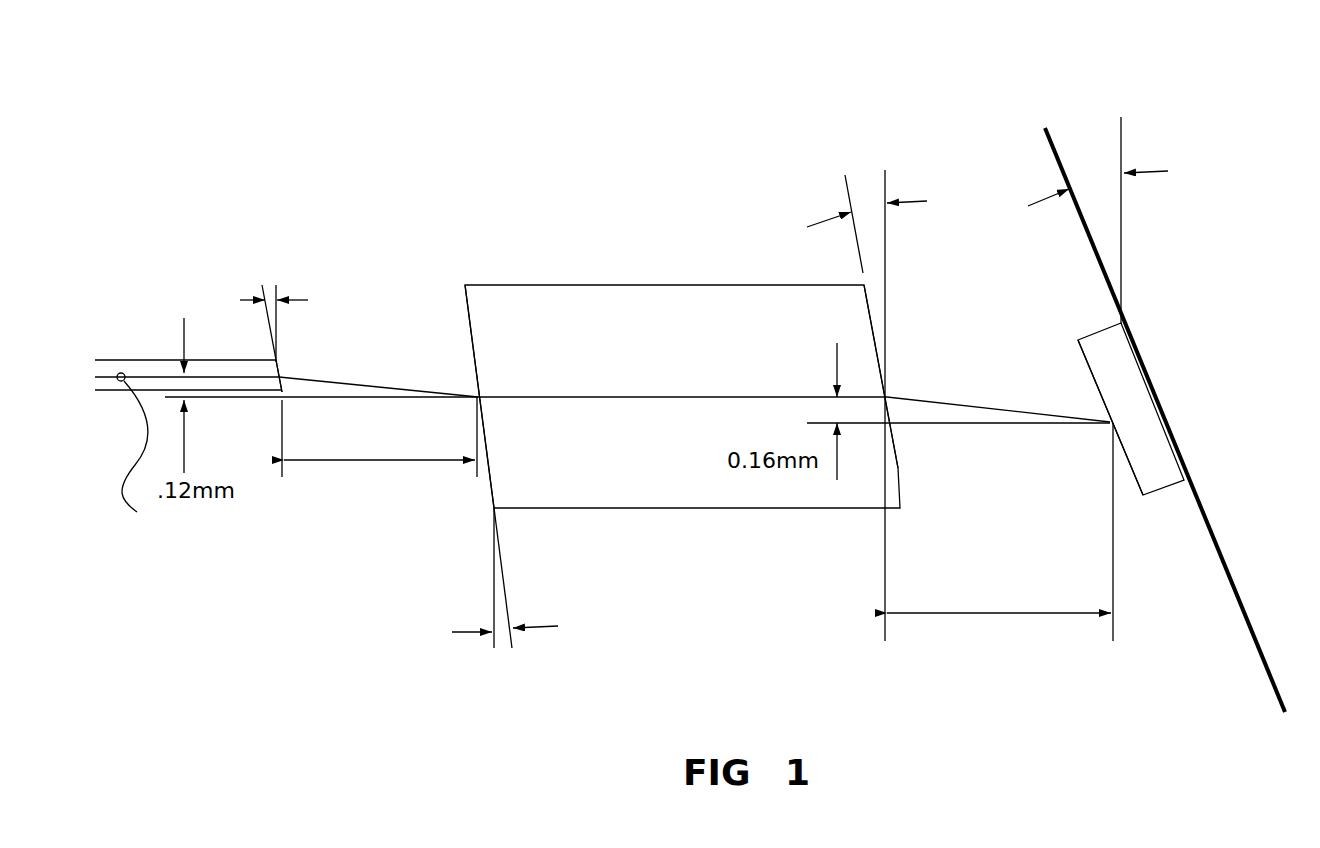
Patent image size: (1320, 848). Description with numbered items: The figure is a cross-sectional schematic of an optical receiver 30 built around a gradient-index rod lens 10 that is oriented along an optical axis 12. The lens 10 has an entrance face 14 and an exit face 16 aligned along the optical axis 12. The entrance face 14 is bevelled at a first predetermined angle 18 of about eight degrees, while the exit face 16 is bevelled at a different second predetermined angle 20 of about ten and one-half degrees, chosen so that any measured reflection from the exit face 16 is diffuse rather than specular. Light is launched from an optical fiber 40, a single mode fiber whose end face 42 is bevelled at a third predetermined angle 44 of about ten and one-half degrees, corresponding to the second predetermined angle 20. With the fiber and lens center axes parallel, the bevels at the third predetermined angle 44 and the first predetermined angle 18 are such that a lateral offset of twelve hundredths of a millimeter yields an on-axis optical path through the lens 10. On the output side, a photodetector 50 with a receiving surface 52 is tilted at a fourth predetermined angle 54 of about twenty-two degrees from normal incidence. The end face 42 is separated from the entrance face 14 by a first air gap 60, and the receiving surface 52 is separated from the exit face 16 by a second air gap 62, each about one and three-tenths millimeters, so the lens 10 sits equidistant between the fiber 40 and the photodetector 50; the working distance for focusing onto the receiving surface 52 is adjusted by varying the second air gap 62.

The GRIN rod lens 10 is at (665, 225).
The optical axis 12 is at (627, 397).
The entrance face 14 is at (416, 393).
The exit face 16 is at (910, 376).
The first predetermined angle 18 is at (502, 650).
The second predetermined angle 20 is at (867, 163).
The optical receiver 30 is at (361, 586).
The optical fiber 40 is at (125, 361).
The end face 42 is at (281, 367).
The third predetermined angle 44 is at (268, 280).
The photodetector 50 is at (1159, 480).
The receiving surface 52 is at (1093, 380).
The fourth predetermined angle 54 is at (1088, 102).
The first air gap 60 is at (379, 448).
The second air gap 62 is at (999, 524).